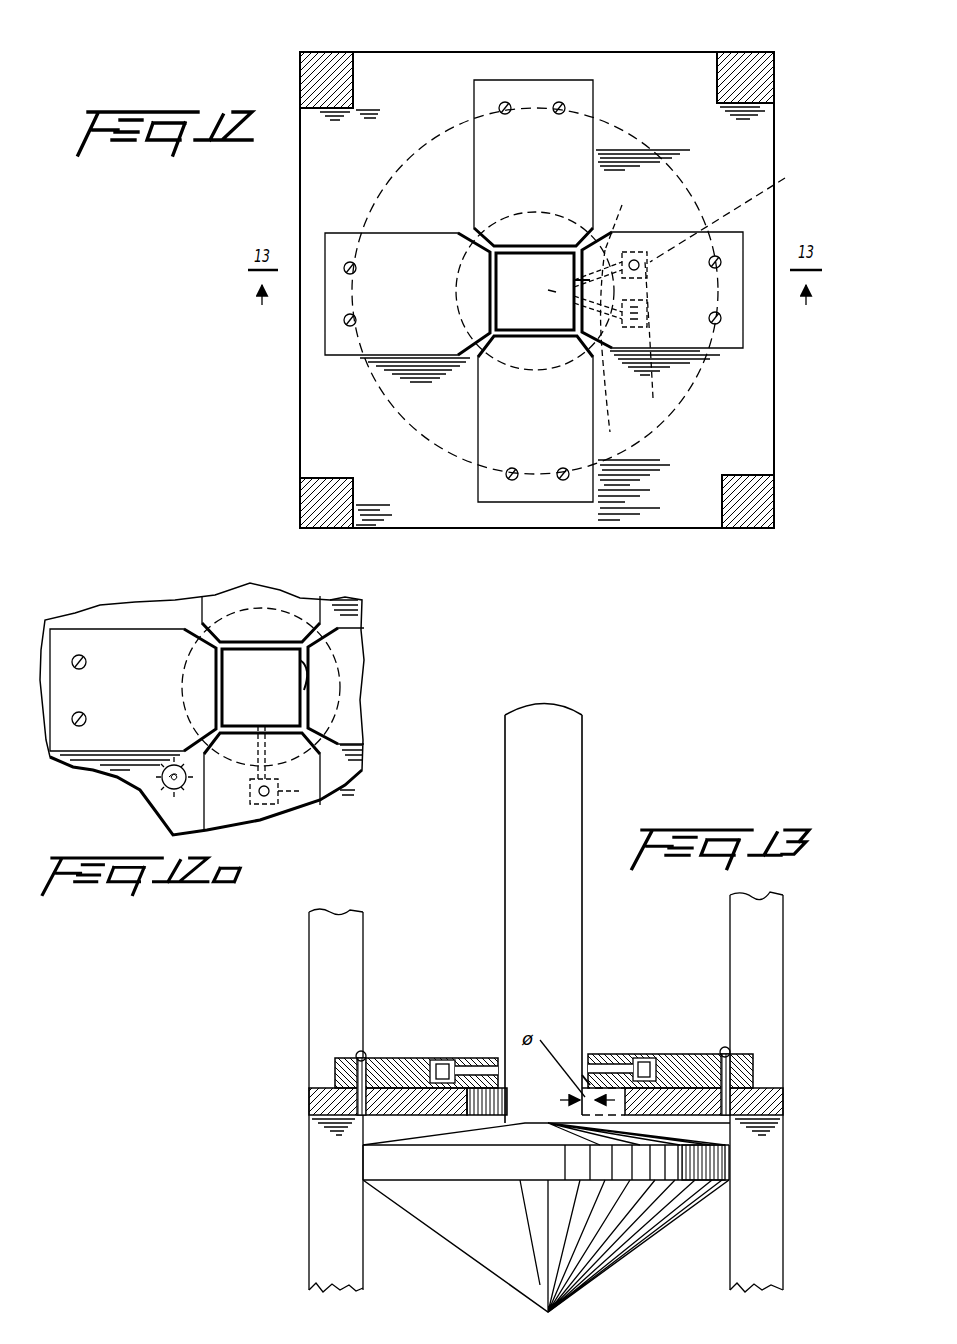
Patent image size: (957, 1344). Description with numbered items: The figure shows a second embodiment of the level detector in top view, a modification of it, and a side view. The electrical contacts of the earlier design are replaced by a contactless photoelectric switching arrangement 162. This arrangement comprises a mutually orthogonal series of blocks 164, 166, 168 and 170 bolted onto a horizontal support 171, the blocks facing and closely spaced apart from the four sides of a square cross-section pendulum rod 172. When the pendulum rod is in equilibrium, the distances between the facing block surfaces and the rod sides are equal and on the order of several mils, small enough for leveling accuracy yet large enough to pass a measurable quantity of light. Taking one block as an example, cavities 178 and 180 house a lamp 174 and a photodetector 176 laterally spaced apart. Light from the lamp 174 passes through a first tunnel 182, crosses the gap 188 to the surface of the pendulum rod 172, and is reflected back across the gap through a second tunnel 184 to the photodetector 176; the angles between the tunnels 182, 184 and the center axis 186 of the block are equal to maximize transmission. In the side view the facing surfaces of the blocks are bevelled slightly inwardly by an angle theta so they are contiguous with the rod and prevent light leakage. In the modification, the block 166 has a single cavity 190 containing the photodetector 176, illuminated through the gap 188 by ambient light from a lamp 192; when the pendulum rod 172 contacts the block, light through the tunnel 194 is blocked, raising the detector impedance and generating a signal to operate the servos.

In FIG. 12, the photoelectric switching arrangement 162 is at (700, 198).
In FIG. 12, the block 164 is at (735, 240).
In FIG. 12A, the block 164 is at (350, 718).
In FIG. 13, the block 164 is at (680, 1052).
In FIG. 12, the block 166 is at (545, 490).
In FIG. 12A, the block 166 is at (300, 800).
In FIG. 12, the block 168 is at (345, 340).
In FIG. 12A, the block 168 is at (115, 637).
In FIG. 13, the block 168 is at (395, 1056).
In FIG. 12, the block 170 is at (572, 92).
In FIG. 12A, the block 170 is at (255, 592).
In FIG. 12, the horizontal support 171 is at (306, 427).
In FIG. 12A, the horizontal support 171 is at (155, 605).
In FIG. 13, the horizontal support 171 is at (785, 1090).
In FIG. 12, the pendulum rod 172 is at (528, 322).
In FIG. 12A, the pendulum rod 172 is at (290, 685).
In FIG. 13, the pendulum rod 172 is at (575, 765).
In FIG. 12, the lamp 174 is at (653, 339).
In FIG. 12, the photodetector 176 is at (640, 250).
In FIG. 12A, the photodetector 176 is at (268, 806).
In FIG. 13, the photodetector 176 is at (438, 1058).
In FIG. 12, the cavity 178 is at (650, 308).
In FIG. 12, the cavity 180 is at (735, 211).
In FIG. 13, the cavity 180 is at (656, 1082).
In FIG. 12, the first tunnel 182 is at (612, 348).
In FIG. 12, the second tunnel 184 is at (627, 215).
In FIG. 13, the second tunnel 184 is at (478, 1058).
In FIG. 12, the center axis 186 is at (552, 290).
In FIG. 12, the gap 188 is at (578, 285).
In FIG. 12A, the gap 188 is at (312, 652).
In FIG. 13, the gap 188 is at (582, 1075).
In FIG. 12A, the cavity 190 is at (300, 790).
In FIG. 12A, the lamp 192 is at (165, 784).
In FIG. 12A, the tunnel 194 is at (290, 755).